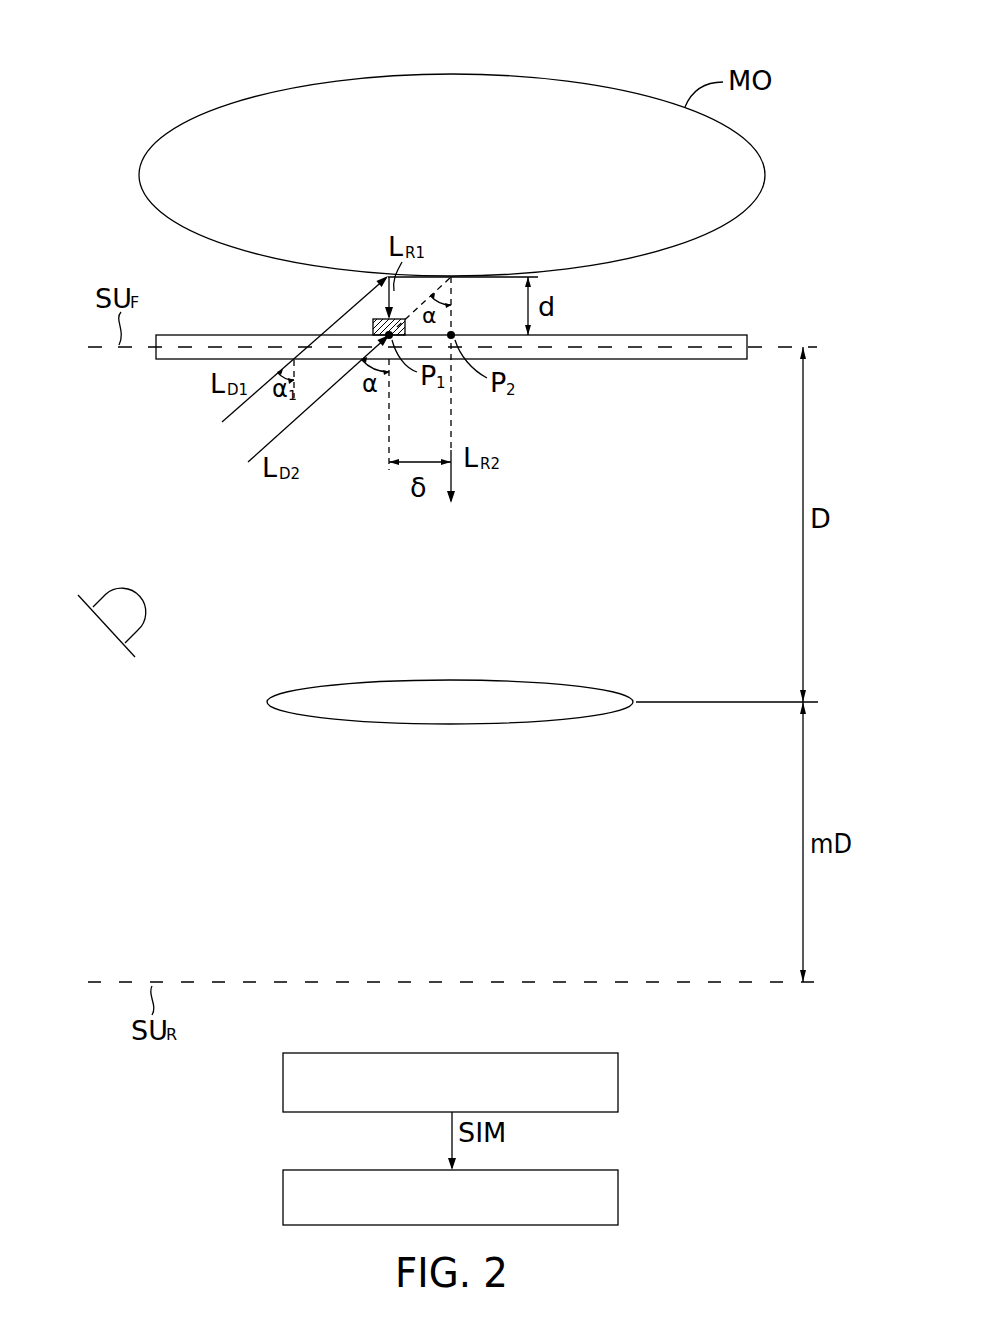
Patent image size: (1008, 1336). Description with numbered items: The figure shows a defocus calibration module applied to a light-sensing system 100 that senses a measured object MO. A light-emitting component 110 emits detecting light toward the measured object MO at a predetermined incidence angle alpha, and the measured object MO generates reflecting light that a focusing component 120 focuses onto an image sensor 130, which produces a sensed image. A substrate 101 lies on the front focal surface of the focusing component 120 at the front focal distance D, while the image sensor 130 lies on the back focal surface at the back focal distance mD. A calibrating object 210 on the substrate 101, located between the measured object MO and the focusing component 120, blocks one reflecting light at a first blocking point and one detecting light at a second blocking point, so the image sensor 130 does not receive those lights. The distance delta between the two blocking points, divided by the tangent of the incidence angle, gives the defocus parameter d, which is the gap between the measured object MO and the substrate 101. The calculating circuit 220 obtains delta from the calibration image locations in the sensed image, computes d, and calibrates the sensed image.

The light-sensing system 100 is at (206, 72).
The substrate 101 is at (721, 336).
The light-emitting component 110 is at (109, 592).
The focusing component 120 is at (627, 697).
The image sensor 130 is at (590, 1053).
The calibrating object 210 is at (372, 326).
The calculating circuit 220 is at (590, 1170).